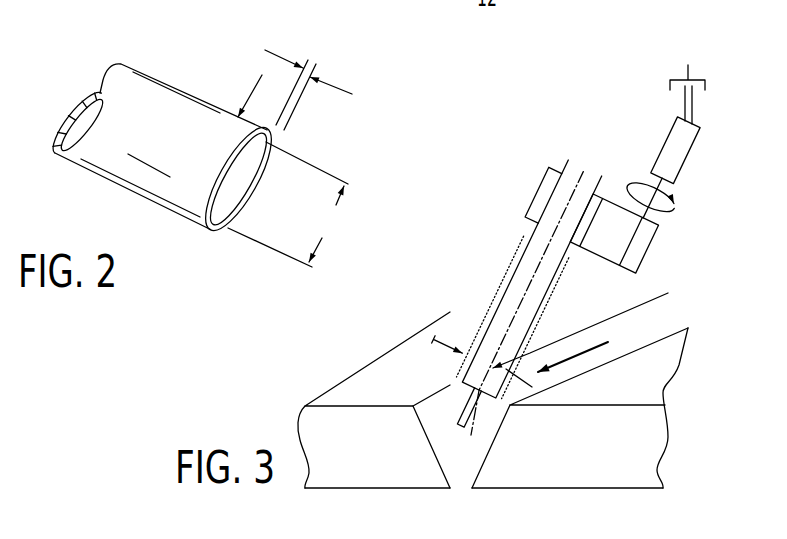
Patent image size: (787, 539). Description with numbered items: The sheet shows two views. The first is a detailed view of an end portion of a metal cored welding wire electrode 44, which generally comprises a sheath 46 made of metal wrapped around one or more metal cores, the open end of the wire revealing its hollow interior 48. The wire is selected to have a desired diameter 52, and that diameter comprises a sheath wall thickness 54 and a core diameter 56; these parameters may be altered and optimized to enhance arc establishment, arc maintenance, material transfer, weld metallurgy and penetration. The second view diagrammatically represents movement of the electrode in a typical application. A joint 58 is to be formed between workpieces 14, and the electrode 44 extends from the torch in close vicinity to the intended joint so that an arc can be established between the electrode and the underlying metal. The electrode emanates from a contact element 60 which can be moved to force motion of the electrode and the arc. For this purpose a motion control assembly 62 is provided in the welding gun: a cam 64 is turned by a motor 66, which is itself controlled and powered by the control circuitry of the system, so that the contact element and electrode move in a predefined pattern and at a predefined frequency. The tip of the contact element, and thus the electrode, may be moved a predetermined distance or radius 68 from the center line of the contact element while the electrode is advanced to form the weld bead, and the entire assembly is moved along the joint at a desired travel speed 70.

In FIG. 3, the workpiece 14 is at (355, 480).
In FIG. 2, the electrode 44 is at (112, 155).
In FIG. 3, the electrode 44 is at (455, 417).
In FIG. 2, the sheath 46 is at (222, 231).
In FIG. 2, the tube bore 48 is at (246, 176).
In FIG. 2, the diameter 52 is at (188, 225).
In FIG. 2, the sheath wall thickness 54 is at (278, 54).
In FIG. 2, the core diameter 56 is at (288, 204).
In FIG. 3, the joint 58 is at (462, 480).
In FIG. 3, the contact element 60 is at (535, 247).
In FIG. 3, the motion control assembly 62 is at (677, 228).
In FIG. 3, the cam 64 is at (607, 247).
In FIG. 3, the motor 66 is at (663, 143).
In FIG. 3, the radius 68 is at (436, 343).
In FIG. 3, the travel speed 70 is at (658, 337).